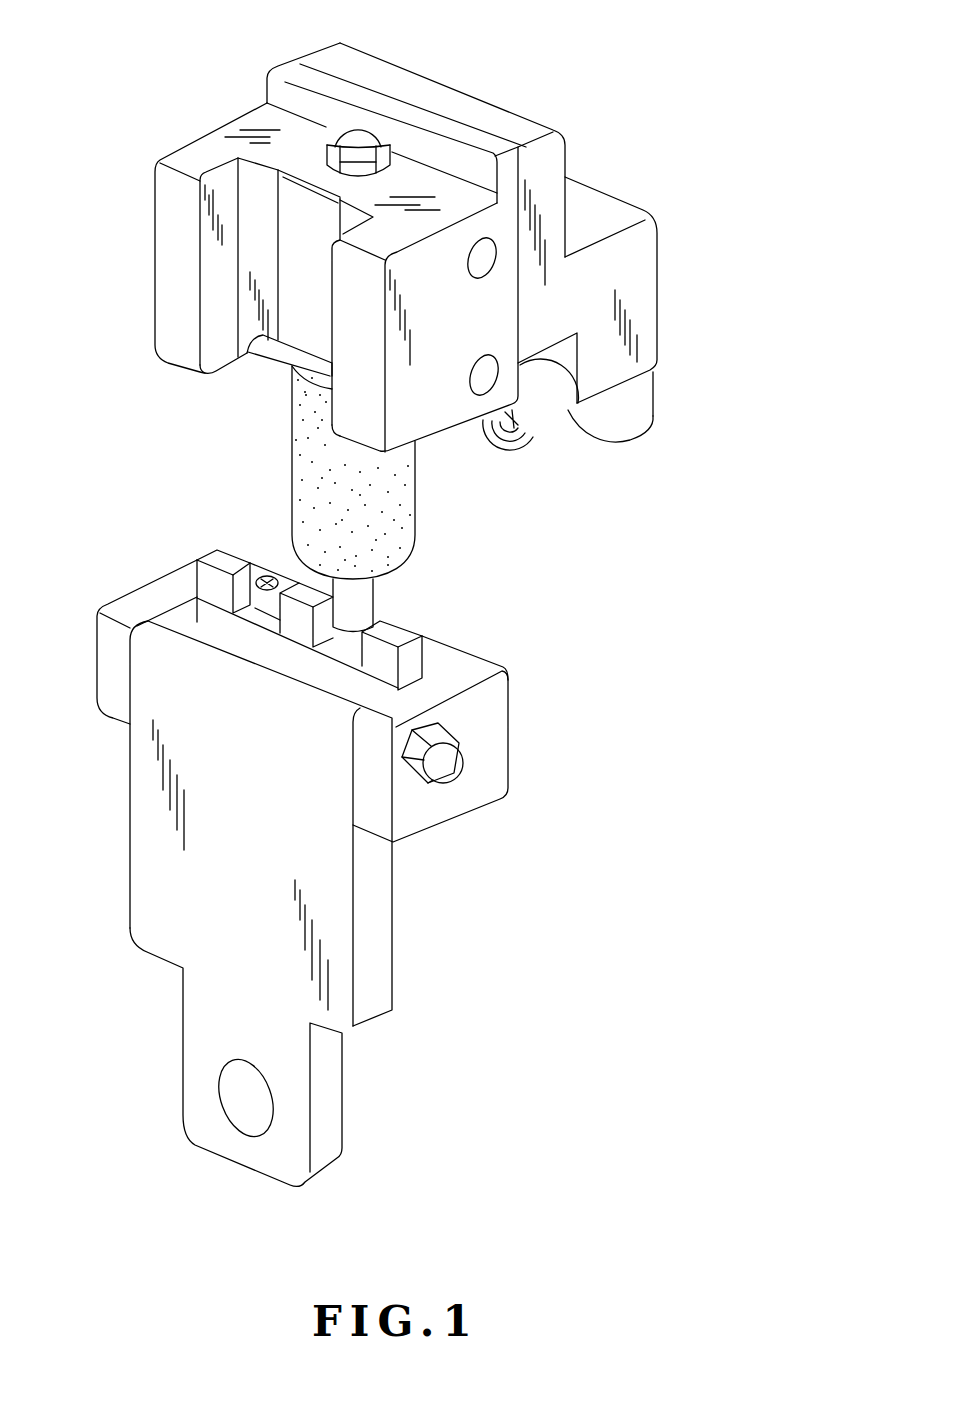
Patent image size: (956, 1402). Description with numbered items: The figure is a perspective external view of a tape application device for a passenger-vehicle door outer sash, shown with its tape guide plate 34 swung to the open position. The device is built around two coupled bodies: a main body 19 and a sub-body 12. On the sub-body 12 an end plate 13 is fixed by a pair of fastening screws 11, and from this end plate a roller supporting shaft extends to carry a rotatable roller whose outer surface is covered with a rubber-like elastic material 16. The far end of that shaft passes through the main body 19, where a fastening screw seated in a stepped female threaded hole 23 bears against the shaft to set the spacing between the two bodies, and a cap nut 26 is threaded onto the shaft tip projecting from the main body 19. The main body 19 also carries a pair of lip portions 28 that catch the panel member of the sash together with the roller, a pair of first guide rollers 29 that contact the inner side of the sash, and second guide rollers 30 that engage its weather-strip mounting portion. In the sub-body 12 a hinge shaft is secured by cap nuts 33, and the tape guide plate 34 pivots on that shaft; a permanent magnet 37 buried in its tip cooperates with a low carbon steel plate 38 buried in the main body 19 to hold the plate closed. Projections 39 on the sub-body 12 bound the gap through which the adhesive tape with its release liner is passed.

The fastening screws 11 is at (265, 578).
The sub-body 12 is at (493, 730).
The end plate 13 is at (287, 573).
The rubber-like elastic material 16 is at (290, 408).
The main body 19 is at (451, 115).
The stepped female threaded hole 23 is at (478, 264).
The cap nut 26 is at (357, 136).
The lip portions 28 is at (560, 417).
The first guide rollers 29 is at (637, 408).
The second guide rollers 30 is at (580, 413).
The cap nuts 33 is at (445, 770).
The tape guide plate 34 is at (180, 848).
The permanent magnet 37 is at (232, 1088).
The low carbon steel plate 38 is at (292, 225).
The projections 39 is at (213, 558).